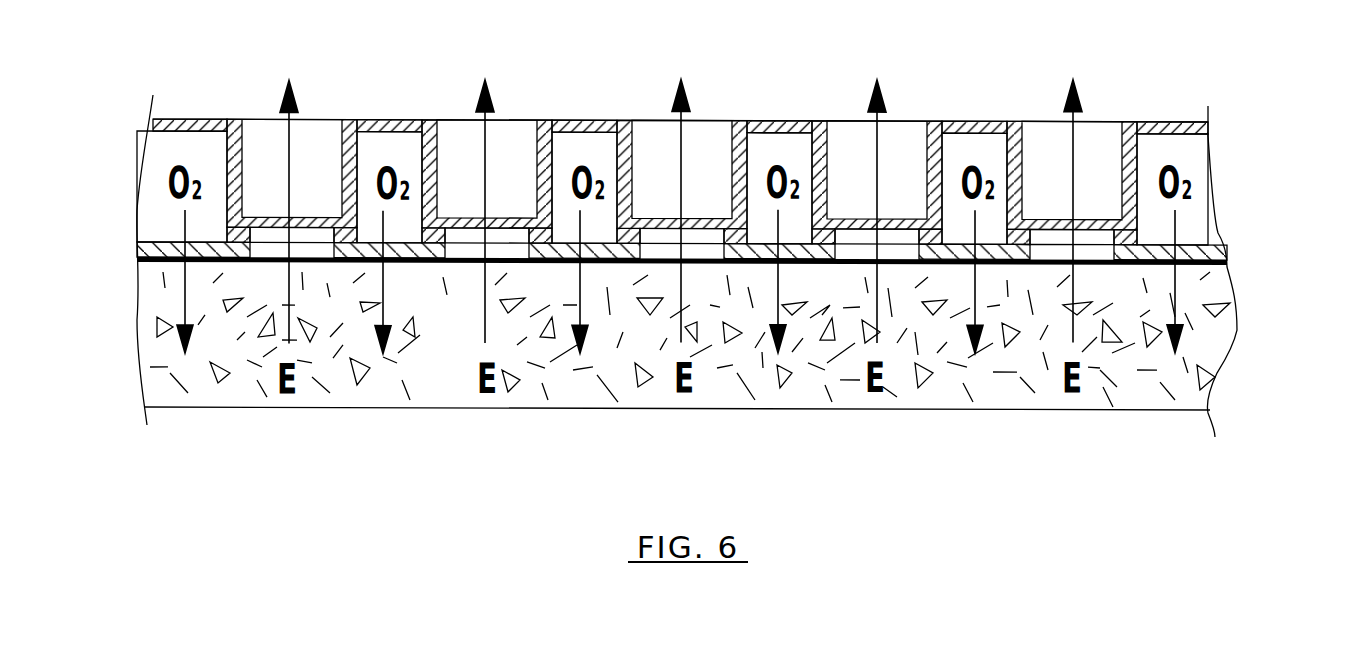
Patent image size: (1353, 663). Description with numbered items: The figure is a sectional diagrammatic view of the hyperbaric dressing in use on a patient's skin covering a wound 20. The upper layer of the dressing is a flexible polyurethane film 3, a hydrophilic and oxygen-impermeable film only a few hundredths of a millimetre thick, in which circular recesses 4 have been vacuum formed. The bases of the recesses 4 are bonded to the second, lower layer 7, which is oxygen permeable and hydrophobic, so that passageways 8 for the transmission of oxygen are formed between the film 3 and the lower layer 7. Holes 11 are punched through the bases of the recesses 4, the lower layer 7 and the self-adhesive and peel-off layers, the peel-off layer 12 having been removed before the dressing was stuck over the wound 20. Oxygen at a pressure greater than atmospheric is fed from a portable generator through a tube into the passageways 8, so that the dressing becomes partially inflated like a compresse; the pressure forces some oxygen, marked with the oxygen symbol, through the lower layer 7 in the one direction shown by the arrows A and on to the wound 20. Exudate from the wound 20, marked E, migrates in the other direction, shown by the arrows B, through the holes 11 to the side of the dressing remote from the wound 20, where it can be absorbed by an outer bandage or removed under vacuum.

The polyurethane film 3 is at (452, 120).
The circular recesses 4 is at (520, 140).
The second, lower layer 7 is at (335, 258).
The passageways 8 is at (358, 145).
The holes 11 is at (458, 242).
The peel-off layer 12 is at (200, 265).
The wound 20 is at (1223, 339).
The one direction arrows A is at (185, 222).
The other direction arrows B is at (280, 158).